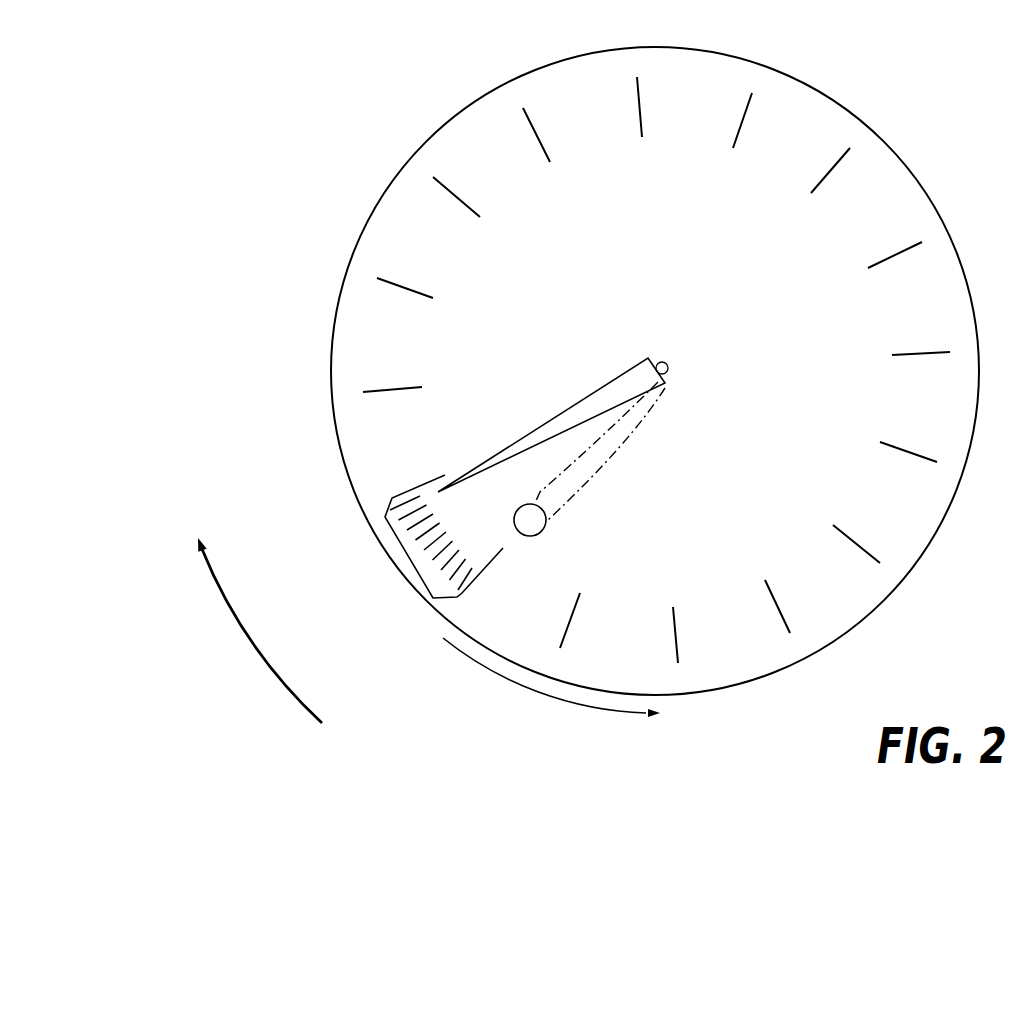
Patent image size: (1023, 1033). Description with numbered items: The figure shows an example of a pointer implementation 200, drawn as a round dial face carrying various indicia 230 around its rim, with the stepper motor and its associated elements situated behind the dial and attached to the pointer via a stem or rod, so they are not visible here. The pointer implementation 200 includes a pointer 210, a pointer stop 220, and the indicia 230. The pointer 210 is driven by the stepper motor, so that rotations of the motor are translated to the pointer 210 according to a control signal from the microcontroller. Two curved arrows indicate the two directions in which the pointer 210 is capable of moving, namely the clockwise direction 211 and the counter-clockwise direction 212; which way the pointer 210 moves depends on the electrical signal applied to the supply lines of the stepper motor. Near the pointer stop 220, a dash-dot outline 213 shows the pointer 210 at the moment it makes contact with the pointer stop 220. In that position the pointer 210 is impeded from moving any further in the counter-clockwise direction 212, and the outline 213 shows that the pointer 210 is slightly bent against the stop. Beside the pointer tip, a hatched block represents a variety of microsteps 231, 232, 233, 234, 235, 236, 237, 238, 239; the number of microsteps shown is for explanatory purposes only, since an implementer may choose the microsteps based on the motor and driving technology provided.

The pointer implementation 200 is at (158, 240).
The pointer 210 is at (558, 410).
The clockwise direction 211 is at (240, 627).
The counter-clockwise direction 212 is at (535, 690).
The outline of the pointer 213 is at (632, 445).
The pointer stop 220 is at (547, 523).
The indicia 230 is at (394, 285).
The microstep 231 is at (402, 570).
The microstep 232 is at (413, 512).
The microstep 233 is at (420, 522).
The microstep 234 is at (428, 531).
The microstep 235 is at (435, 541).
The microstep 236 is at (443, 550).
The microstep 237 is at (450, 560).
The microstep 238 is at (458, 569).
The microstep 239 is at (465, 579).